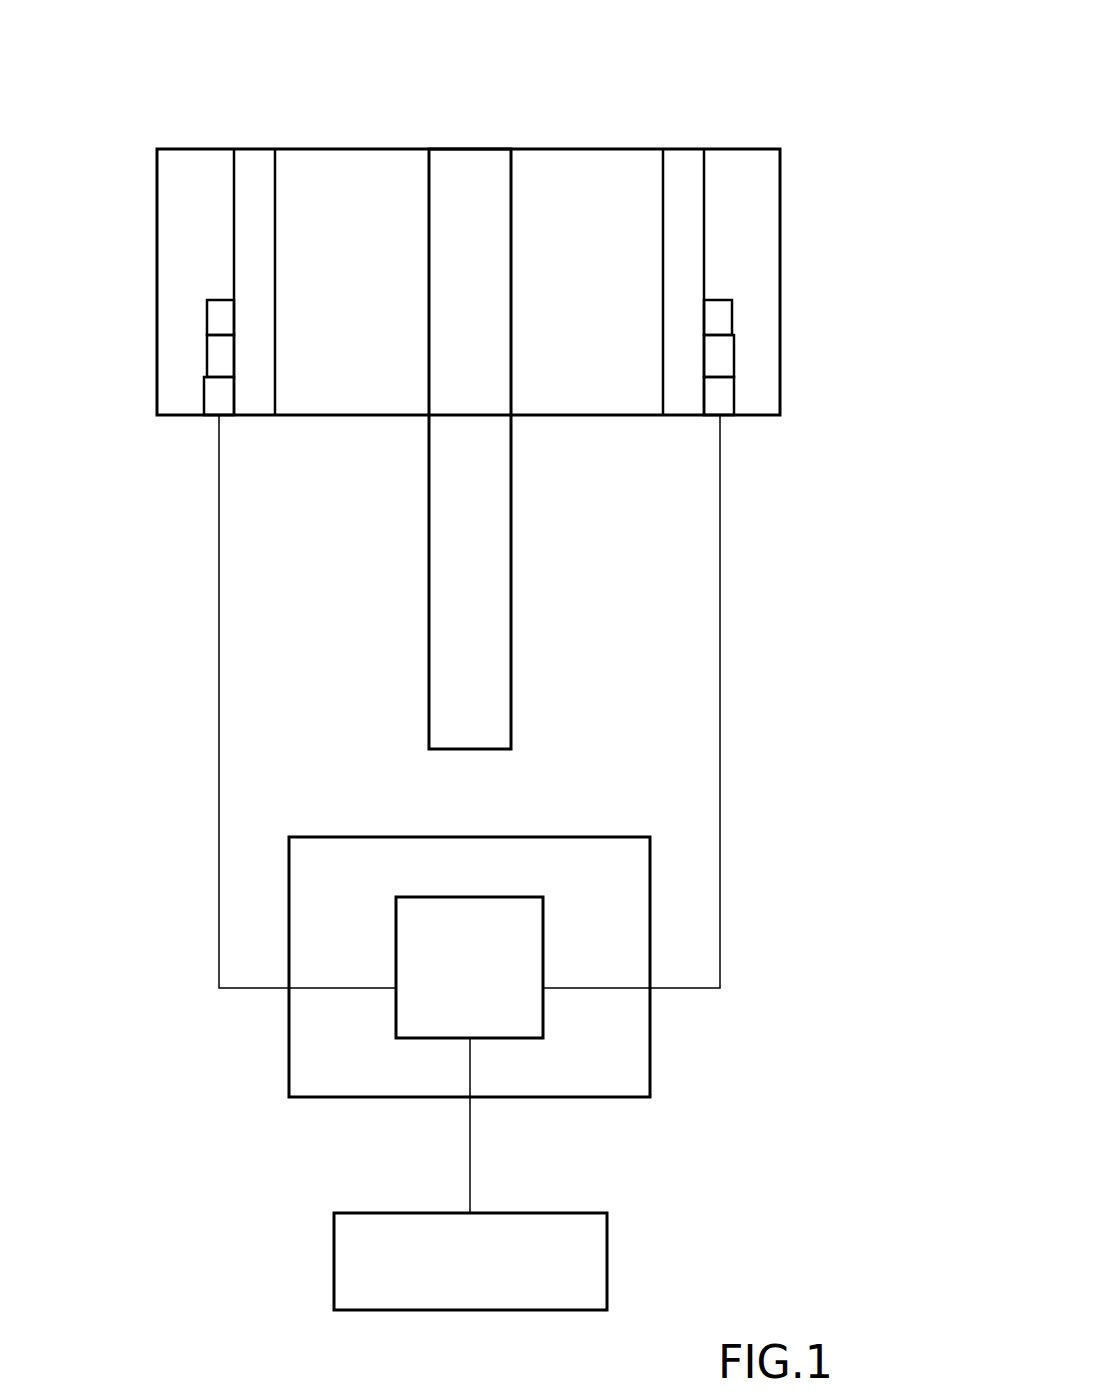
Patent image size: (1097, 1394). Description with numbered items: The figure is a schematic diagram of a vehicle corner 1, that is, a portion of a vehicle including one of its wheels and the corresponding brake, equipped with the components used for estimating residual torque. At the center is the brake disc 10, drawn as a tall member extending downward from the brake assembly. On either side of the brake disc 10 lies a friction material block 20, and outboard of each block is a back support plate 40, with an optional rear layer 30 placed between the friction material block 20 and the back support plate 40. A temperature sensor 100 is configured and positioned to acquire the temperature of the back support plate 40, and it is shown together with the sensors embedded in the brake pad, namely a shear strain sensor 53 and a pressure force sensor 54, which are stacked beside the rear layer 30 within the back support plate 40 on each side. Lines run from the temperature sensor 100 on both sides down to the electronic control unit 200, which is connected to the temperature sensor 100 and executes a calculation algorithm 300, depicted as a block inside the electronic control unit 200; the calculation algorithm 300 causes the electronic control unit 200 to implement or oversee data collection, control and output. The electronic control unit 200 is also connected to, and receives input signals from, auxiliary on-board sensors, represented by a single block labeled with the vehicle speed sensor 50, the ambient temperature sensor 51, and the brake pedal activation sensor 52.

The vehicle corner 1 is at (858, 114).
The brake disc 10 is at (478, 165).
The friction material block 20 is at (350, 175).
The rear layer 30 is at (256, 165).
The back support plate 40 is at (200, 173).
The shear strain sensor 53 is at (220, 350).
The pressure force sensor 54 is at (218, 317).
The temperature sensor 100 is at (217, 392).
The electronic control unit 200 is at (289, 1053).
The calculation algorithm 300 is at (506, 940).
The vehicle speed sensor 50 is at (599, 1245).
The ambient temperature sensor 51 is at (470, 1261).
The brake pedal activation sensor 52 is at (608, 1255).